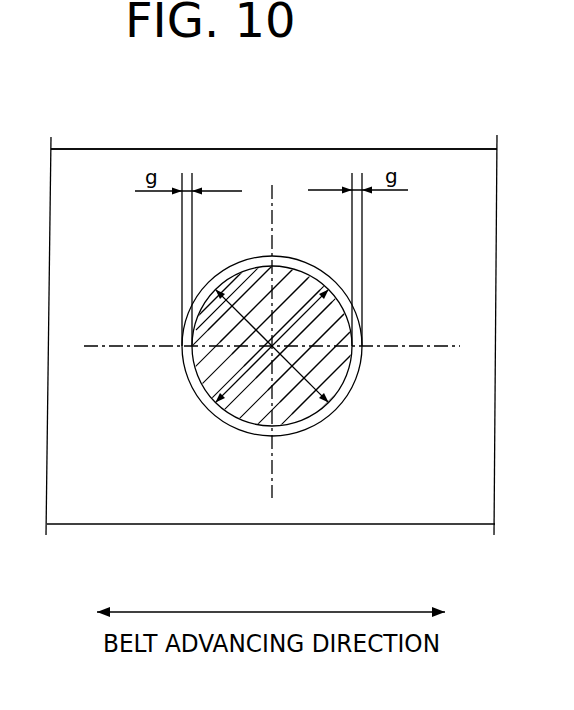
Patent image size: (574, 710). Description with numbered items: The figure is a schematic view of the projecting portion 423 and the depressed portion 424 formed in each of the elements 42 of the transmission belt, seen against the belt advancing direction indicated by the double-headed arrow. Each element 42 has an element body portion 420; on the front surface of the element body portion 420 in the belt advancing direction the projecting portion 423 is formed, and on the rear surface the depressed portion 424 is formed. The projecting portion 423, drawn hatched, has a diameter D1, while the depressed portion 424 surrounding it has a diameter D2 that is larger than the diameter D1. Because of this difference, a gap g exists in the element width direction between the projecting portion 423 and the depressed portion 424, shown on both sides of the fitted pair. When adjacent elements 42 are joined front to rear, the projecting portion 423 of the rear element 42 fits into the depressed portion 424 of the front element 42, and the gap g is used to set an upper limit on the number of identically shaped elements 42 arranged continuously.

The element 42 is at (128, 128).
The element body portion 420 is at (447, 158).
The projecting portion 423 is at (308, 405).
The depressed portion 424 is at (189, 386).
The diameter of the projecting portion D1 is at (246, 394).
The diameter of the depressed portion D2 is at (312, 400).